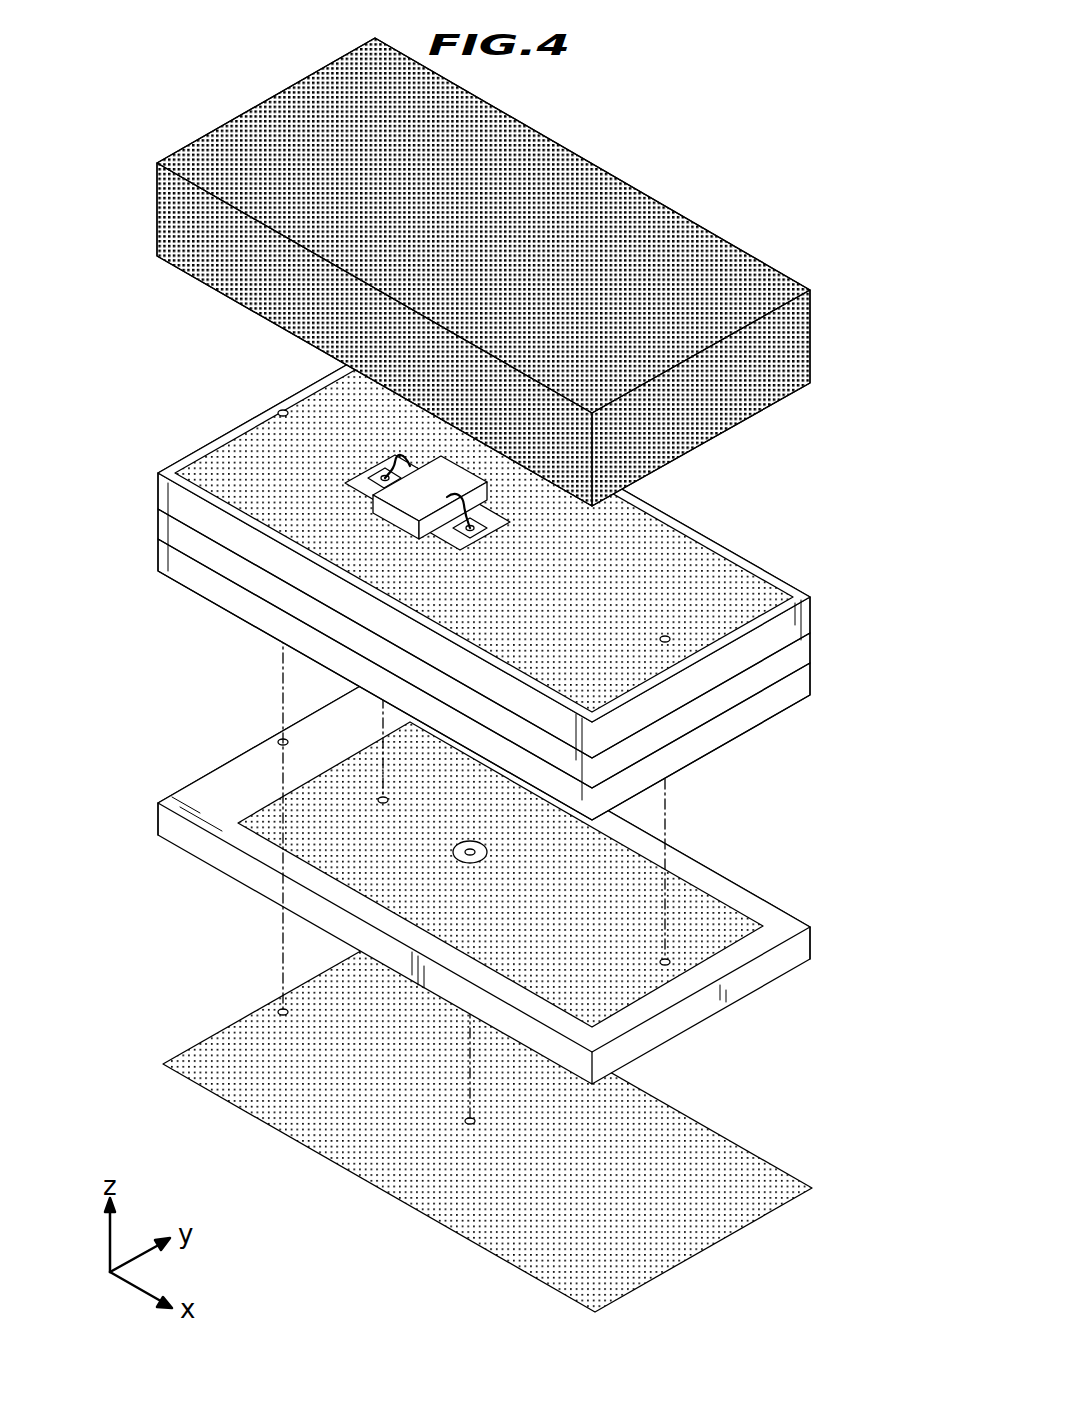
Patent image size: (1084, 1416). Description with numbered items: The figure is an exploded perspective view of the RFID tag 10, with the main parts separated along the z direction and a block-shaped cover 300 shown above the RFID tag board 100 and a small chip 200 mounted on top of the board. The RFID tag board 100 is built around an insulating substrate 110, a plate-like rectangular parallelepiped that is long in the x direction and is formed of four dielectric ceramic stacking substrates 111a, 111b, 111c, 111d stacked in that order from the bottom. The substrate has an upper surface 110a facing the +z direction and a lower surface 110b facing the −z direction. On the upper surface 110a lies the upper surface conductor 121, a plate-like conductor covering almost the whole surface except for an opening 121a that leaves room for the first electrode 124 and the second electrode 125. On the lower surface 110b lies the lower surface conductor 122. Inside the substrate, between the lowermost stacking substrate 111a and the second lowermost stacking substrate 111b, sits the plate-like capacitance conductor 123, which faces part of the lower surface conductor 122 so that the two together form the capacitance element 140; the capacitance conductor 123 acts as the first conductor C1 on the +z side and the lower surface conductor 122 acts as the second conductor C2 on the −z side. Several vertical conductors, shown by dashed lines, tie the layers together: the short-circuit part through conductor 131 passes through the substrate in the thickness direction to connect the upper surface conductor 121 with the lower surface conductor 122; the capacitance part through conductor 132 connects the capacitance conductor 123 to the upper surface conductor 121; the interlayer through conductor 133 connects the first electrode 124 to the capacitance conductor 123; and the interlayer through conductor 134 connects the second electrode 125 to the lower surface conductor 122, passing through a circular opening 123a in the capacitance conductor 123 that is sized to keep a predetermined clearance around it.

The RFID tag 10 is at (720, 140).
The RFID tag board 100 is at (122, 428).
The insulating substrate 110 is at (887, 703).
The upper surface 110a is at (800, 598).
The lower surface 110b is at (225, 853).
The stacking substrate 111a is at (733, 893).
The stacking substrate 111b is at (718, 730).
The stacking substrate 111c is at (733, 690).
The stacking substrate 111d is at (755, 650).
The upper surface conductor 121 is at (707, 577).
The opening 121a is at (512, 522).
The lower surface conductor 122 is at (695, 1175).
The capacitance conductor 123 is at (692, 943).
The opening 123a is at (487, 852).
The first electrode 124 is at (370, 477).
The second electrode 125 is at (445, 537).
The short-circuit part through conductor 131 is at (282, 960).
The capacitance part through conductor 132 is at (667, 923).
The interlayer through conductor 133 is at (382, 682).
The interlayer through conductor 134 is at (470, 1057).
The capacitance element 140 is at (887, 995).
The first conductor C1 is at (559, 833).
The second conductor C2 is at (487, 1126).
The sensor chip 200 is at (418, 465).
The cover 300 is at (712, 270).